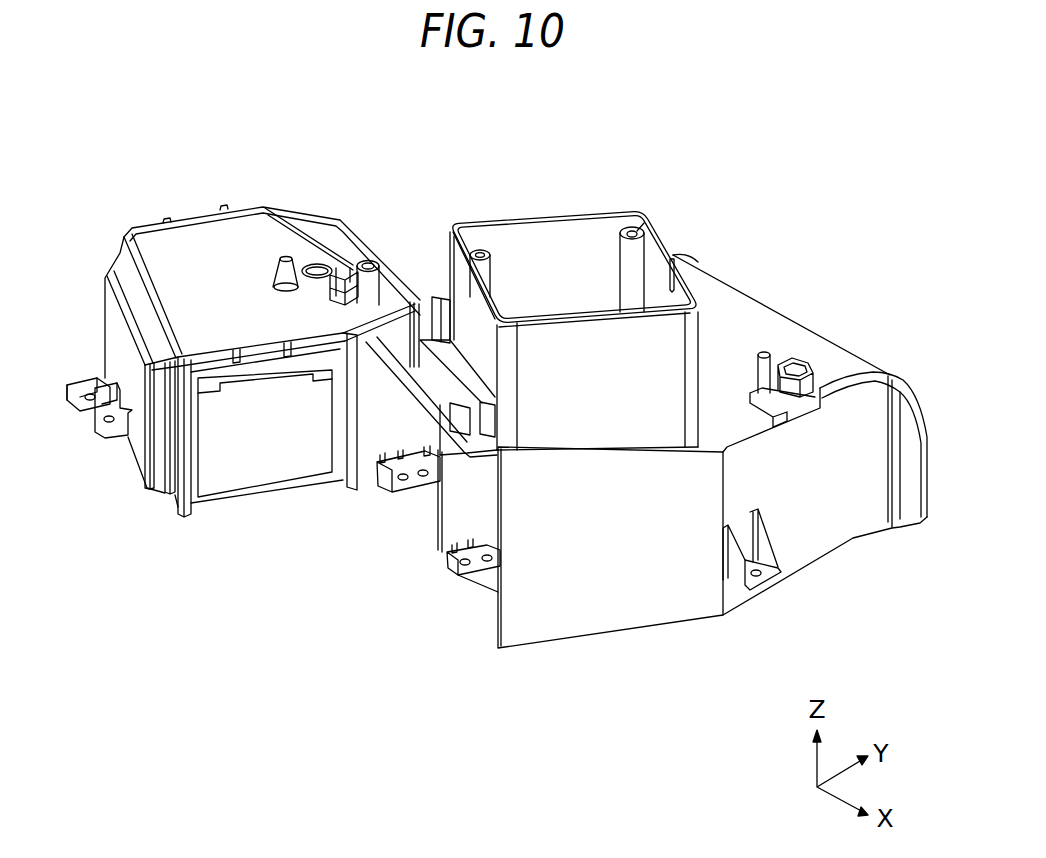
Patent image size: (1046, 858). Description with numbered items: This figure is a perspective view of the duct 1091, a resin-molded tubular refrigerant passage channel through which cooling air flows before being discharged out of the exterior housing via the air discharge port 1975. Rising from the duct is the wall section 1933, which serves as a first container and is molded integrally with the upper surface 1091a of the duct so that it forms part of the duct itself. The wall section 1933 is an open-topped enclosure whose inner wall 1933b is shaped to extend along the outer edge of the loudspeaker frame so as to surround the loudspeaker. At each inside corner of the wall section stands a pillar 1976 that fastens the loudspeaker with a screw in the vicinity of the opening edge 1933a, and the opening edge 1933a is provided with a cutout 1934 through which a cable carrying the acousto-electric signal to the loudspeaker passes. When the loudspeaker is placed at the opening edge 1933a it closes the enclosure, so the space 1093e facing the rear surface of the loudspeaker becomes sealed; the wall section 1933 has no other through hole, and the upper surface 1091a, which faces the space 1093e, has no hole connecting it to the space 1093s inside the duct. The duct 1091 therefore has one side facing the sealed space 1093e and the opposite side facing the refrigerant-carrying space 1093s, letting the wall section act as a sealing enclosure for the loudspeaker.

The air discharge port 1975 is at (260, 455).
The pillar 1976 is at (482, 247).
The wall section 1933 is at (593, 213).
The opening edge 1933a is at (670, 238).
The inner wall 1933b is at (532, 265).
The cutout 1934 is at (687, 257).
The space 1093e is at (596, 421).
The duct 1091 is at (558, 597).
The upper surface 1091a is at (740, 370).
The space 1093s is at (633, 549).